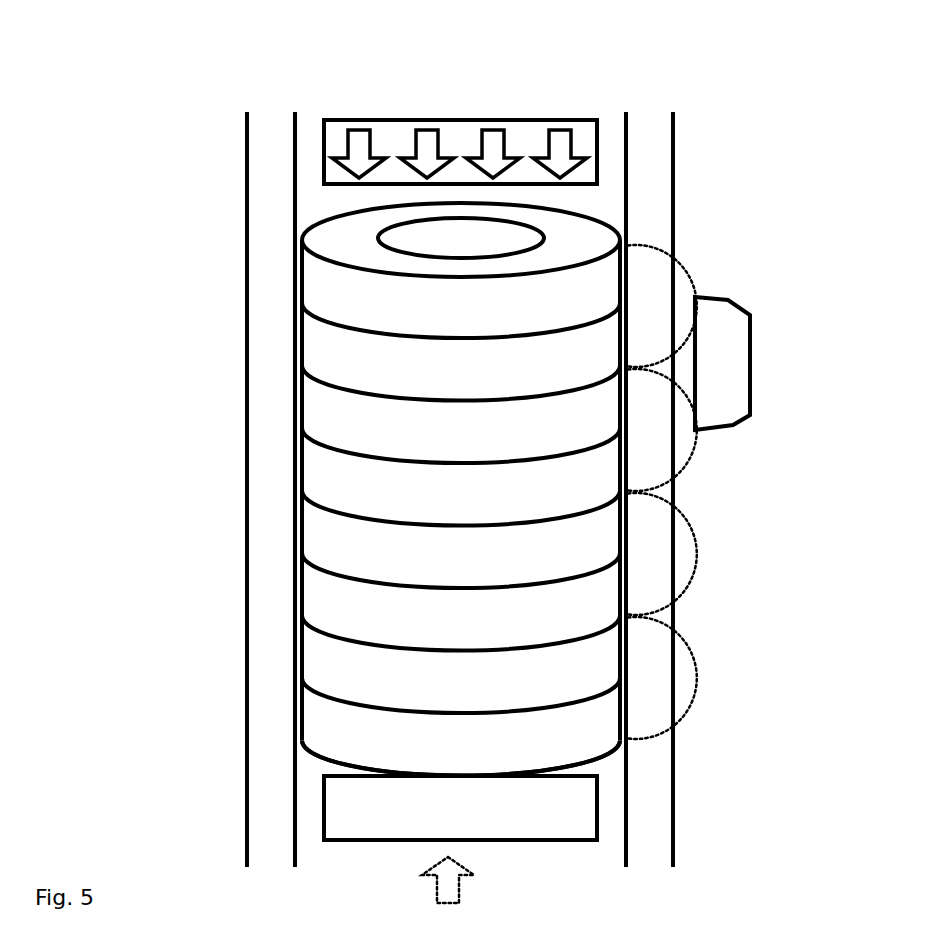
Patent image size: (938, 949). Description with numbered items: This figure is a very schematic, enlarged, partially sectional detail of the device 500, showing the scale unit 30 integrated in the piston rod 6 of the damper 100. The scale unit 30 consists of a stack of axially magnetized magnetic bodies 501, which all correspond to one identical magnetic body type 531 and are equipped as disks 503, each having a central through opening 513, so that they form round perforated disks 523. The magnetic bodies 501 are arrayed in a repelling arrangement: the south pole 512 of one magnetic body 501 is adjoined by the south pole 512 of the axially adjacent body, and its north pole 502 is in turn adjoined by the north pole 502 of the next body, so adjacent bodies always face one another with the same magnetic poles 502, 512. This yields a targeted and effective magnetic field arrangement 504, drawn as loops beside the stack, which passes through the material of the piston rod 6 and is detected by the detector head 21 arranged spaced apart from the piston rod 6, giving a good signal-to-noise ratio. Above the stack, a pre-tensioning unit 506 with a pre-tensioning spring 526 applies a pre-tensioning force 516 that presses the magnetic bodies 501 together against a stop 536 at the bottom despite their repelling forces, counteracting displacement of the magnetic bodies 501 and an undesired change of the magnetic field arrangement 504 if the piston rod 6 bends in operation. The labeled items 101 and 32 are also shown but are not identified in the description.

The device 500 is at (113, 67).
The outer housing wall 101 is at (244, 147).
The piston rod 6 is at (245, 187).
The scale unit 30 is at (310, 130).
The pre-tensioning unit 506 is at (368, 118).
The pre-tensioning force 516 is at (428, 150).
The pre-tensioning spring 526 is at (530, 122).
The damper 100 is at (747, 88).
The outer tube wall 32 is at (730, 165).
The magnetic field arrangement 504 is at (686, 265).
The detector head 21 is at (740, 330).
The central through opening 513 is at (448, 242).
The disk 503 is at (318, 292).
The round perforated disk 523 is at (210, 490).
The magnetic body 501 is at (300, 620).
The magnetic body type 531 is at (325, 742).
The south pole 512 is at (570, 675).
The north pole 502 is at (572, 733).
The stop 536 is at (537, 828).